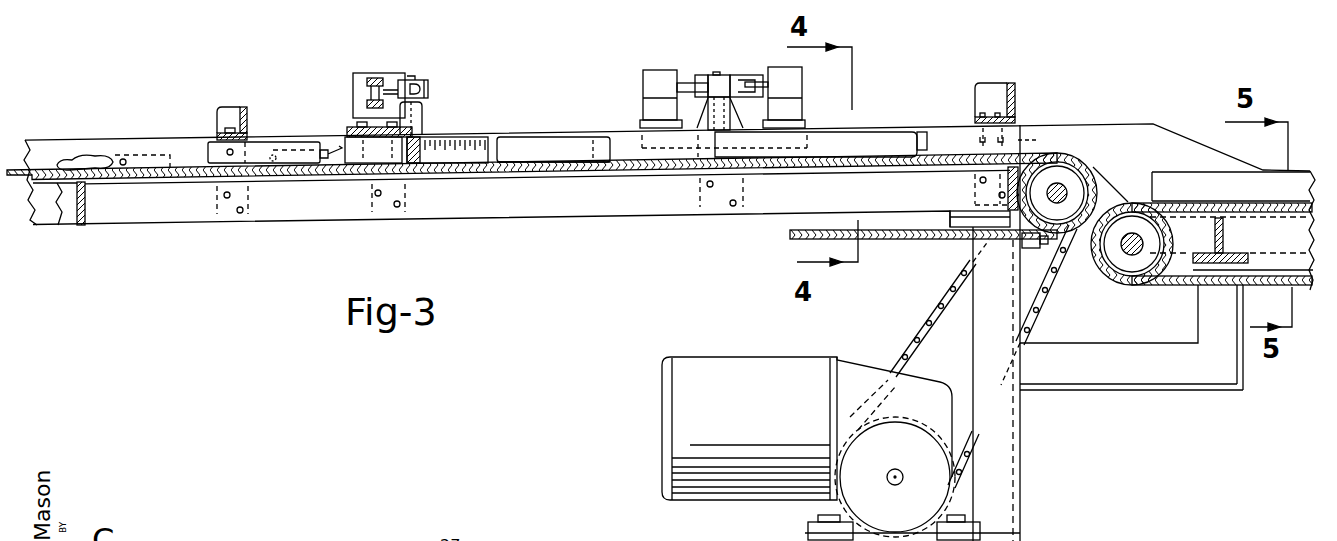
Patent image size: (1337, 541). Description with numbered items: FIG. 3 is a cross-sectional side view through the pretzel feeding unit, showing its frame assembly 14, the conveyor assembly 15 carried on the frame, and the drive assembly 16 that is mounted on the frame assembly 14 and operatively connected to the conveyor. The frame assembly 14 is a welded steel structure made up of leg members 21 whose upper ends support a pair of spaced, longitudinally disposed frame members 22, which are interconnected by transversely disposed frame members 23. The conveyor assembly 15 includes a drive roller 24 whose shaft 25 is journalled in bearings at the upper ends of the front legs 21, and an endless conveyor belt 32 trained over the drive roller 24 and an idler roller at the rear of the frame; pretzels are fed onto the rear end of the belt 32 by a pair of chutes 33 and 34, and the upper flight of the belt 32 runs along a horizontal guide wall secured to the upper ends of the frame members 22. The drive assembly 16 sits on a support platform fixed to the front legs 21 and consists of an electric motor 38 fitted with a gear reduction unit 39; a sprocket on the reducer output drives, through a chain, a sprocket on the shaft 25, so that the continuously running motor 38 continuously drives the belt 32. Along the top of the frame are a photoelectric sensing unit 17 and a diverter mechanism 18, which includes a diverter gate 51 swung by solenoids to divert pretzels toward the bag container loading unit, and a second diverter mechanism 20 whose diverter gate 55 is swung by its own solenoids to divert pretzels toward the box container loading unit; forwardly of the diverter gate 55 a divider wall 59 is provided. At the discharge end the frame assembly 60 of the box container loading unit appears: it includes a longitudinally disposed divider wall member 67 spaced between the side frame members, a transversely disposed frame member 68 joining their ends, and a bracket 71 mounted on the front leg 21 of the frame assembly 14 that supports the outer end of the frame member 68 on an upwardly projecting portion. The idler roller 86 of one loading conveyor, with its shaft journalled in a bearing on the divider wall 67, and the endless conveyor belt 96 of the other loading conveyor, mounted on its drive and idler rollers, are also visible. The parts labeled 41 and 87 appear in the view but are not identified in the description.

The frame assembly 14 is at (512, 218).
The conveyor assembly 15 is at (643, 180).
The drive assembly 16 is at (658, 403).
The photoelectric sensing unit 17 is at (252, 127).
The diverter mechanism 18 is at (422, 75).
The diverter mechanism 20 is at (743, 54).
The leg members 21 is at (1013, 490).
The frame members 22 is at (267, 210).
The frame members 23 is at (90, 218).
The drive roller 24 is at (1080, 172).
The shaft 25 is at (1068, 192).
The endless conveyor belt 32 is at (550, 158).
The chute 33 is at (497, 157).
The chute 34 is at (460, 177).
The electric motor 38 is at (767, 362).
The gear reduction unit 39 is at (923, 456).
The diagonal brace 41 is at (937, 307).
The diverter gate 51 is at (473, 130).
The diverter gate 55 is at (890, 137).
The divider wall 59 is at (1187, 114).
The frame assembly 60 is at (1221, 392).
The divider wall member 67 is at (1252, 177).
The frame member 68 is at (1227, 240).
The bracket 71 is at (1102, 375).
The idler roller 86 is at (1113, 280).
The second pulley 87 is at (1133, 252).
The endless conveyor belt 96 is at (1262, 284).